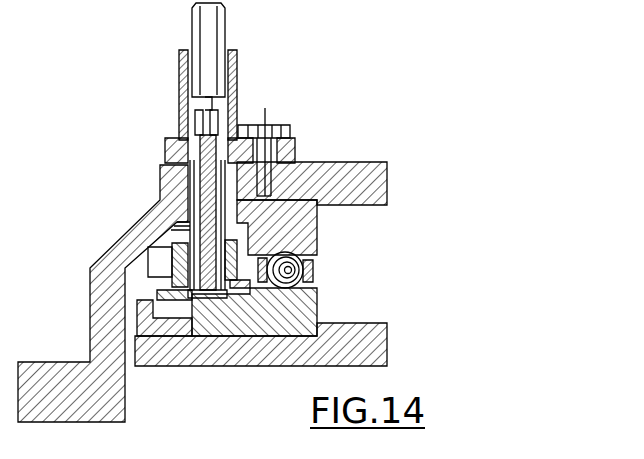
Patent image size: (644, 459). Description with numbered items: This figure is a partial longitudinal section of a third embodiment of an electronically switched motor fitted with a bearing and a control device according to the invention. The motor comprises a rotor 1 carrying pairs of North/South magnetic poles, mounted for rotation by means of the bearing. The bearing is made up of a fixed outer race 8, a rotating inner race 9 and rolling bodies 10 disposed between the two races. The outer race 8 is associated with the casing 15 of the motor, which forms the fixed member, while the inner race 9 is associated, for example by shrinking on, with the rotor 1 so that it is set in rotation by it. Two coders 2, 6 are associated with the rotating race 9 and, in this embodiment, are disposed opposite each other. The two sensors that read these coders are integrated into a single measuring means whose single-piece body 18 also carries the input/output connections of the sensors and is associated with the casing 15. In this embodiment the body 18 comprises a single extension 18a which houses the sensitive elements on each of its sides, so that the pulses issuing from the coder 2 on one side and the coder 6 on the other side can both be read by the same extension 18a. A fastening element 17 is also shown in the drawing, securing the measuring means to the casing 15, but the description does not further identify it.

The rotor 1 is at (372, 336).
The coder 2 is at (172, 268).
The coder 6 is at (226, 298).
The fixed outer race 8 is at (318, 228).
The rotating inner race 9 is at (300, 317).
The rolling bodies 10 is at (303, 271).
The casing 15 is at (358, 163).
The bolt 17 is at (285, 123).
The body 18 is at (165, 148).
The extension 18a is at (198, 186).